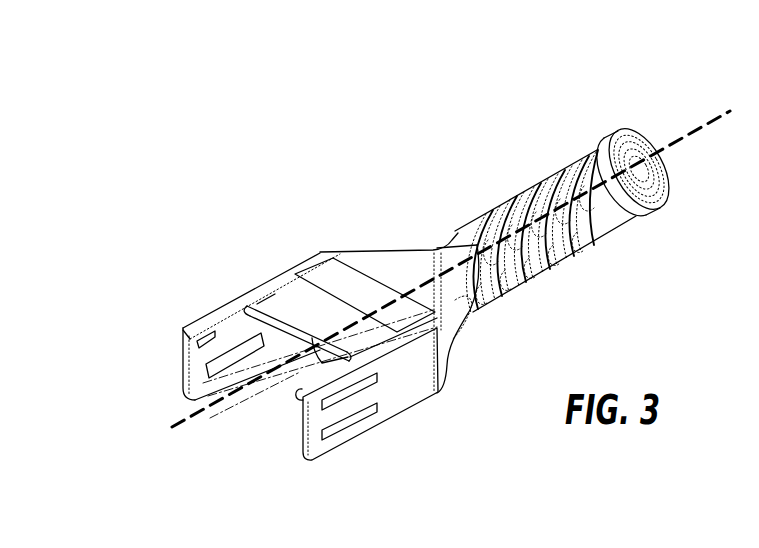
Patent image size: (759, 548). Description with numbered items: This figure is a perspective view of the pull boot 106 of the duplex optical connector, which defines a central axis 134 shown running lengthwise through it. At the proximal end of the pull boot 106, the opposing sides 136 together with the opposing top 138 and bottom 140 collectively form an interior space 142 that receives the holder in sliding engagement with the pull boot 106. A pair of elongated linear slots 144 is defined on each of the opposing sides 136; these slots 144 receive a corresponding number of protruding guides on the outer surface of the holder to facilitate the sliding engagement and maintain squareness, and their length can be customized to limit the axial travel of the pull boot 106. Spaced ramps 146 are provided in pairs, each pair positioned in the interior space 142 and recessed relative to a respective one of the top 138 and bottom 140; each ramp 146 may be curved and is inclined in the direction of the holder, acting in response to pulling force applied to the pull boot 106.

The pull boot 106 is at (295, 334).
The central axis 134 is at (719, 121).
The opposing sides 136 is at (205, 355).
The top 138 is at (287, 275).
The bottom 140 is at (286, 373).
The interior space 142 is at (216, 336).
The elongated linear slots 144 is at (362, 387).
The ramps 146 is at (409, 310).